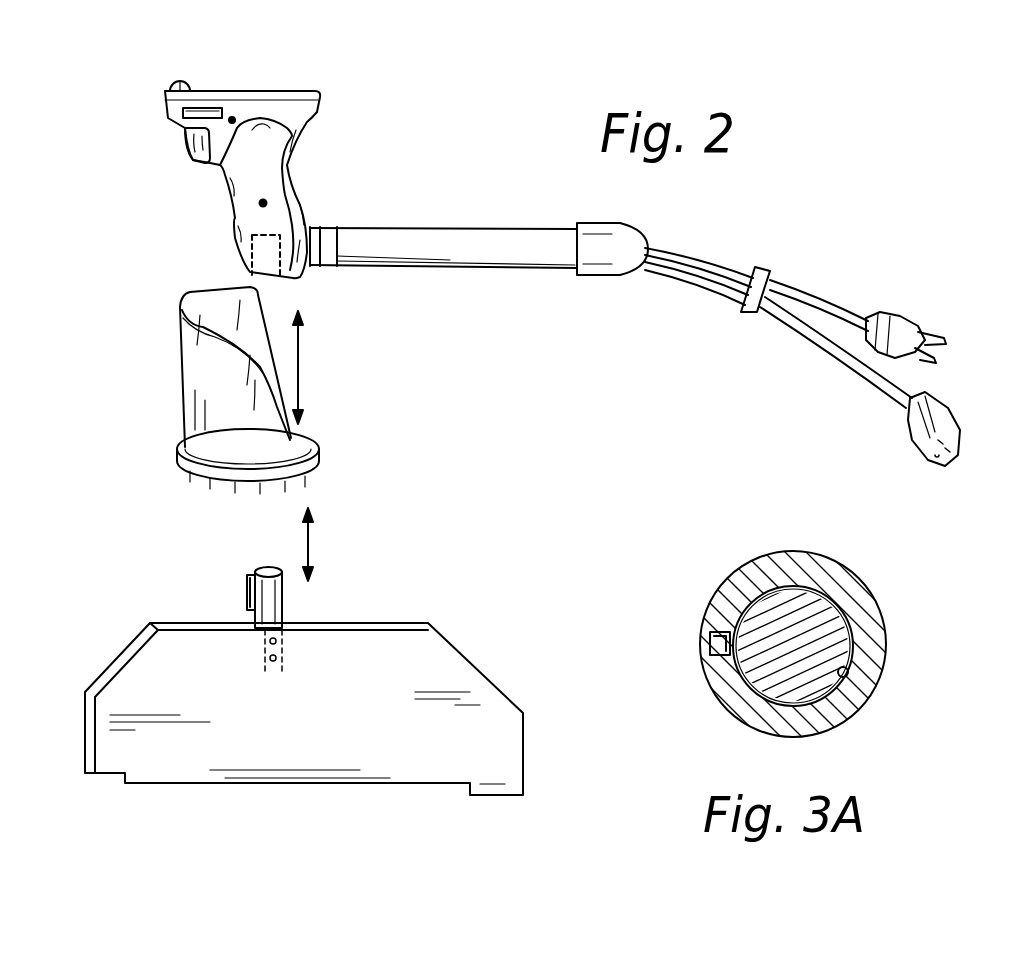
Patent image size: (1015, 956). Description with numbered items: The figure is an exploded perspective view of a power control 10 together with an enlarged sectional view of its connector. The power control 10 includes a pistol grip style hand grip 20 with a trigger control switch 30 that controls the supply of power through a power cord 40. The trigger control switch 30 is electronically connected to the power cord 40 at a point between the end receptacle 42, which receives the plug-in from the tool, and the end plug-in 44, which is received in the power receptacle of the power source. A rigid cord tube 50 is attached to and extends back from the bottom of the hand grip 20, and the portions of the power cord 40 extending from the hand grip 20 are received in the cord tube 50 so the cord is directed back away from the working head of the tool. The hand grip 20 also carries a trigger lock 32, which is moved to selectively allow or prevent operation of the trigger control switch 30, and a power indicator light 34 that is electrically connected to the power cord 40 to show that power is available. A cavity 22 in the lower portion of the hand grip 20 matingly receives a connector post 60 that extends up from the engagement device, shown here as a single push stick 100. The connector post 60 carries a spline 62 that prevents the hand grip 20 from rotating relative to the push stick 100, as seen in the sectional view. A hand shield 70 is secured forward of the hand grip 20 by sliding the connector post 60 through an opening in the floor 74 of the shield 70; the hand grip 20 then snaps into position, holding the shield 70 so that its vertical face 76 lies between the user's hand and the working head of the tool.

In FIG. 2, the power control 10 is at (93, 252).
In FIG. 2, the hand grip 20 is at (278, 190).
In FIG. 3A, the hand grip 20 is at (868, 625).
In FIG. 2, the socket / bore 22 is at (272, 280).
In FIG. 3A, the socket / bore 22 is at (858, 670).
In FIG. 2, the trigger control switch 30 is at (189, 153).
In FIG. 2, the trigger lock 32 is at (215, 112).
In FIG. 2, the power indicator light 34 is at (186, 86).
In FIG. 2, the power cord 40 is at (797, 337).
In FIG. 2, the end receptacle 42 is at (948, 412).
In FIG. 2, the end plug-in 44 is at (898, 318).
In FIG. 2, the cord tube 50 is at (455, 243).
In FIG. 2, the connector post 60 is at (268, 570).
In FIG. 3A, the connector post 60 is at (780, 703).
In FIG. 2, the spline 62 is at (247, 597).
In FIG. 3A, the spline 62 is at (725, 660).
In FIG. 2, the hand shield 70 is at (153, 395).
In FIG. 2, the floor 74 is at (300, 447).
In FIG. 2, the vertical face 76 is at (221, 407).
In FIG. 2, the single push stick 100 is at (330, 730).